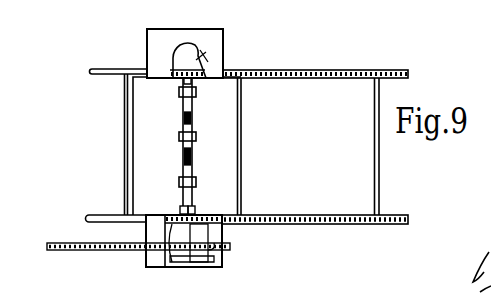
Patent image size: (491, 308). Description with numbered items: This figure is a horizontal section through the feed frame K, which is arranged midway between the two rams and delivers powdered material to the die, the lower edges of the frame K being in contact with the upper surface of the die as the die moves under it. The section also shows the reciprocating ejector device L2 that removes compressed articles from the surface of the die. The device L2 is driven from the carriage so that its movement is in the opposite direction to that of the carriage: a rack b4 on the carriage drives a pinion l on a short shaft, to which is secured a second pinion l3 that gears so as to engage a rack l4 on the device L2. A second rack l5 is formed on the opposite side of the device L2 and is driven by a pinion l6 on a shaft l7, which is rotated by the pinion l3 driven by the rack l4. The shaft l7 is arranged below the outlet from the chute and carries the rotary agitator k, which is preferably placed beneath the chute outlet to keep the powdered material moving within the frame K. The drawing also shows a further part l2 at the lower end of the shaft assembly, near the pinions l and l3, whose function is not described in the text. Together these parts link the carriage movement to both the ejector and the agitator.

The feed frame K is at (242, 131).
The device L2 is at (373, 160).
The pinion l is at (221, 238).
The shaft foot part l2 is at (198, 212).
The pinion l3 is at (180, 212).
The rack l4 is at (253, 215).
The second rack l5 is at (260, 73).
The pinion l6 is at (192, 66).
The shaft l7 is at (193, 127).
The rotary agitator k is at (178, 97).
The rack b4 is at (75, 243).